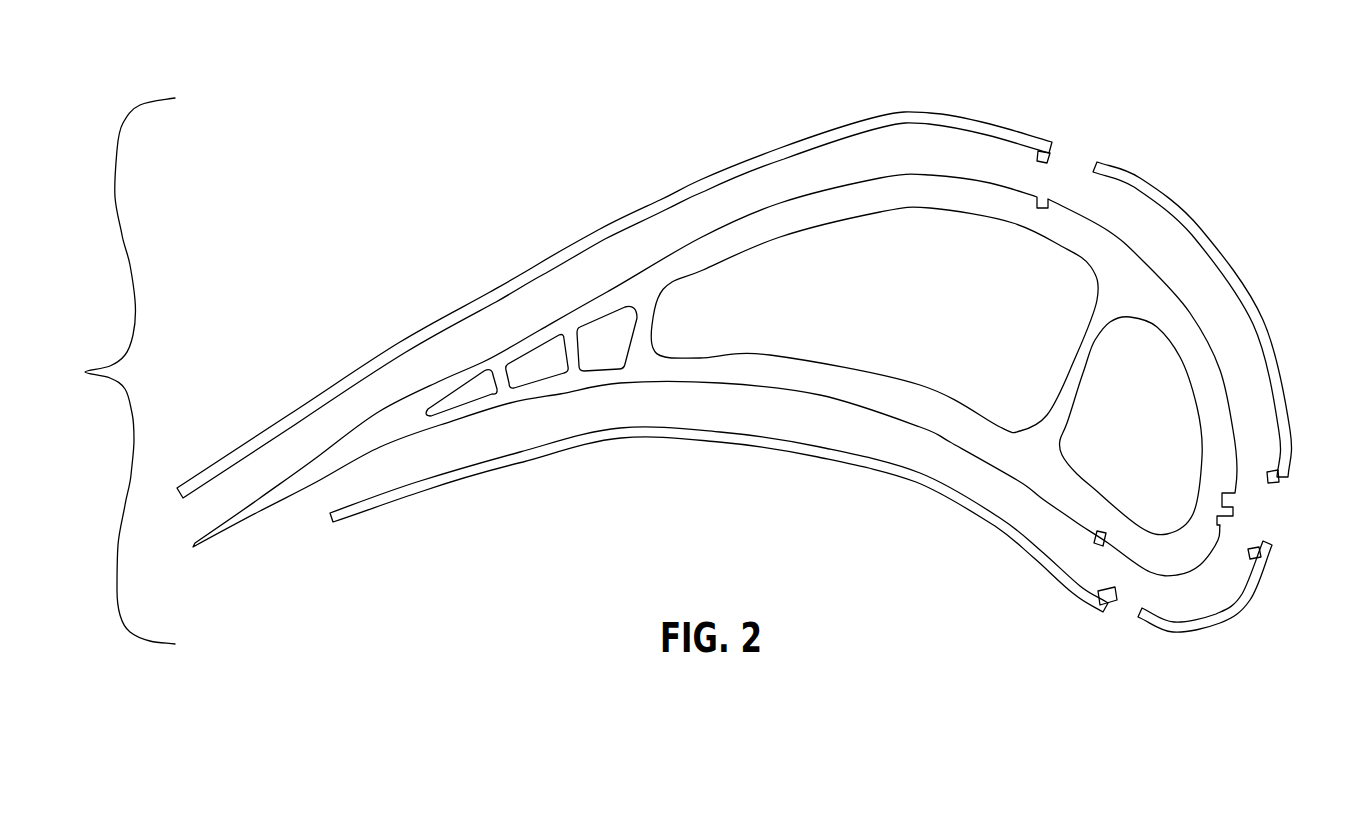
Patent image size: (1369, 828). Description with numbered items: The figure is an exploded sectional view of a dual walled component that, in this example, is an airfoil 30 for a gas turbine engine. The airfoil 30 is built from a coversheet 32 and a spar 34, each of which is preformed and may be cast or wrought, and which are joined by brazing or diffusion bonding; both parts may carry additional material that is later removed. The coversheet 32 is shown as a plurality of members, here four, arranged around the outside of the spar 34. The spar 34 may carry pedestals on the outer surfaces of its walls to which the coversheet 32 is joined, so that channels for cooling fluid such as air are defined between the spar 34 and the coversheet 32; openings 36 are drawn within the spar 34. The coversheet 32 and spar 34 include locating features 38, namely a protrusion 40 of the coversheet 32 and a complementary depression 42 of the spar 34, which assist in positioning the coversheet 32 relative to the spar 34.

The airfoil 30 is at (86, 372).
The coversheet 32 is at (583, 243).
The spar 34 is at (1103, 252).
The pockets 36 is at (511, 380).
The locating features 38 is at (1118, 587).
The protrusion 40 is at (1100, 600).
The depression 42 is at (1097, 546).